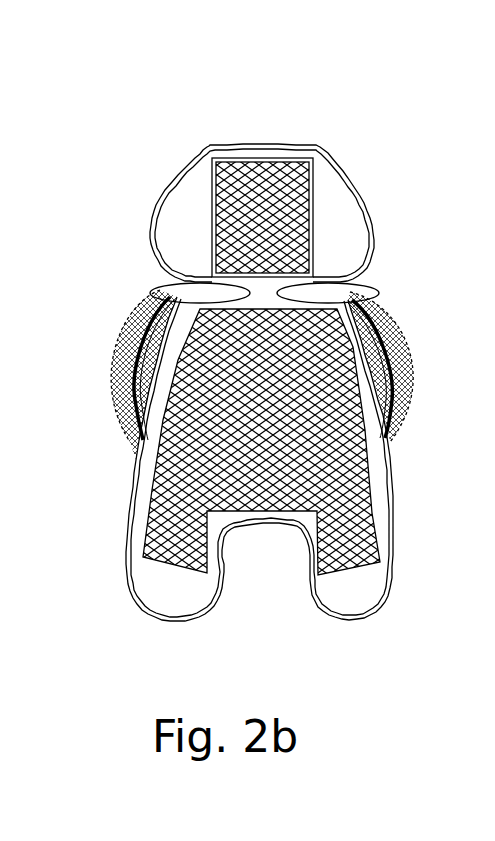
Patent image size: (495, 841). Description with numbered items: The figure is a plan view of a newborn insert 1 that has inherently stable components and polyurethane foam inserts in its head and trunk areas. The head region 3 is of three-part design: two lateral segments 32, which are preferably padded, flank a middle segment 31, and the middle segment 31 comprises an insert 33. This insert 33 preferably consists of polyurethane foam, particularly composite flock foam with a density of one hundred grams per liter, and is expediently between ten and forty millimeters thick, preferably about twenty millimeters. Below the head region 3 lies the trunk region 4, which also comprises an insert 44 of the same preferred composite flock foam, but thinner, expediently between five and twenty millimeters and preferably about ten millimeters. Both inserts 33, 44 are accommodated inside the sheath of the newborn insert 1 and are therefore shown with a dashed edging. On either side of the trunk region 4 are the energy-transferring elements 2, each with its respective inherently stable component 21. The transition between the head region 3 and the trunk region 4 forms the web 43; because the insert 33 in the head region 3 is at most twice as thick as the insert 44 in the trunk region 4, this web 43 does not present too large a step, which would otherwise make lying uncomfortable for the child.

The newborn insert 1 is at (165, 152).
The energy-transferring elements 2 is at (115, 352).
The inherently stable components 21 is at (125, 313).
The head region 3 is at (327, 150).
The middle segment 31 is at (240, 147).
The lateral segments 32 is at (172, 218).
The insert 33 is at (278, 152).
The trunk region 4 is at (397, 500).
The web 43 is at (370, 282).
The insert 44 is at (372, 462).